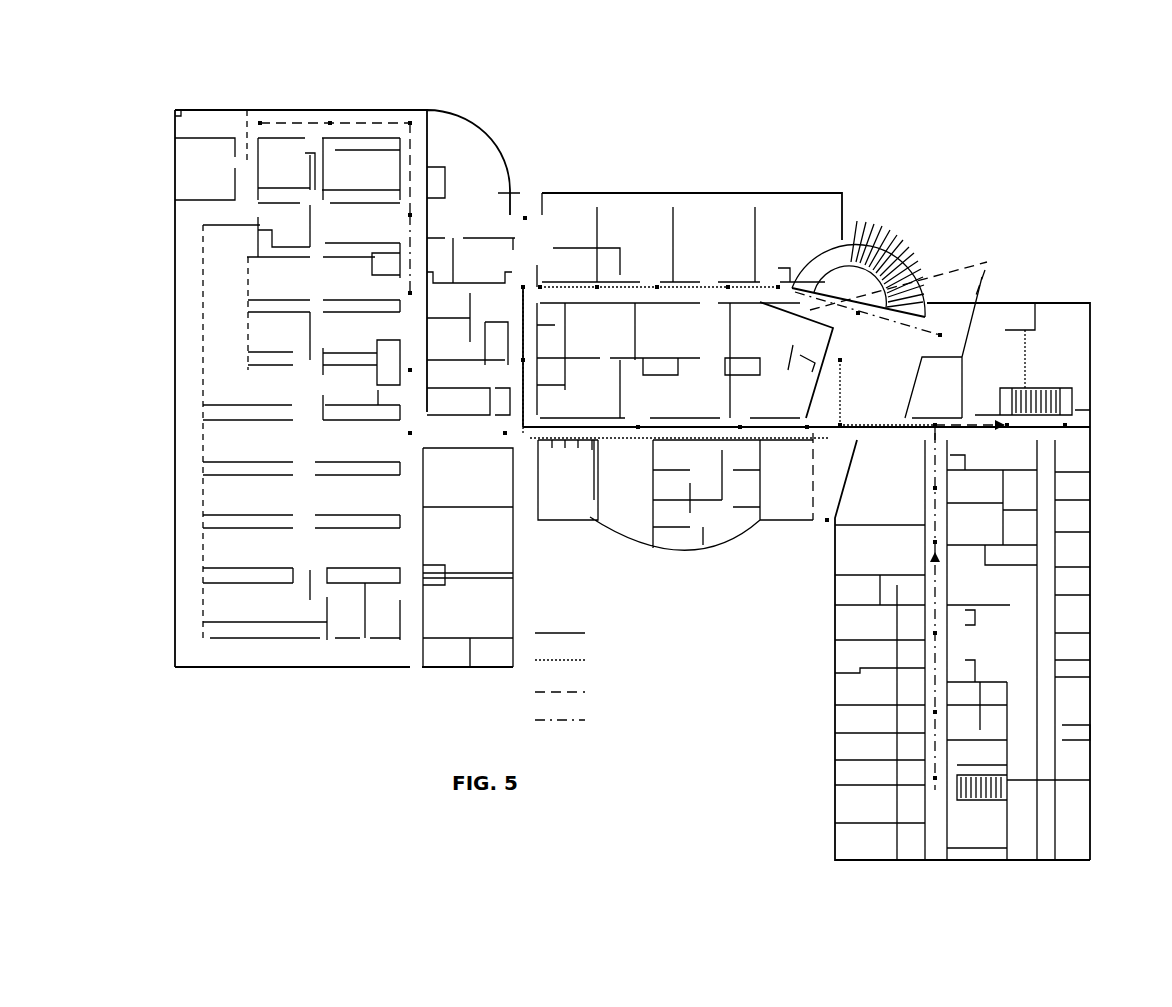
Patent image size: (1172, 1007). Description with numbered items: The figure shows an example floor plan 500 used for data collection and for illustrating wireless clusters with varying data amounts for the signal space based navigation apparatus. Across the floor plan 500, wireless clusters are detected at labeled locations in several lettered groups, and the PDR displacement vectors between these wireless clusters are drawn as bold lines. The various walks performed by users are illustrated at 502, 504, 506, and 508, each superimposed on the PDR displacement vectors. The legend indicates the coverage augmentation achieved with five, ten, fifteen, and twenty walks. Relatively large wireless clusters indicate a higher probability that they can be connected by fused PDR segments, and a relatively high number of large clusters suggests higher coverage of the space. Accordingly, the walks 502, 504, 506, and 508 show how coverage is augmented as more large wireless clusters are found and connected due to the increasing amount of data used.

The floor plan 500 is at (992, 106).
The walk 502 is at (288, 116).
The walk 504 is at (553, 283).
The walk 506 is at (930, 324).
The walk 508 is at (679, 427).